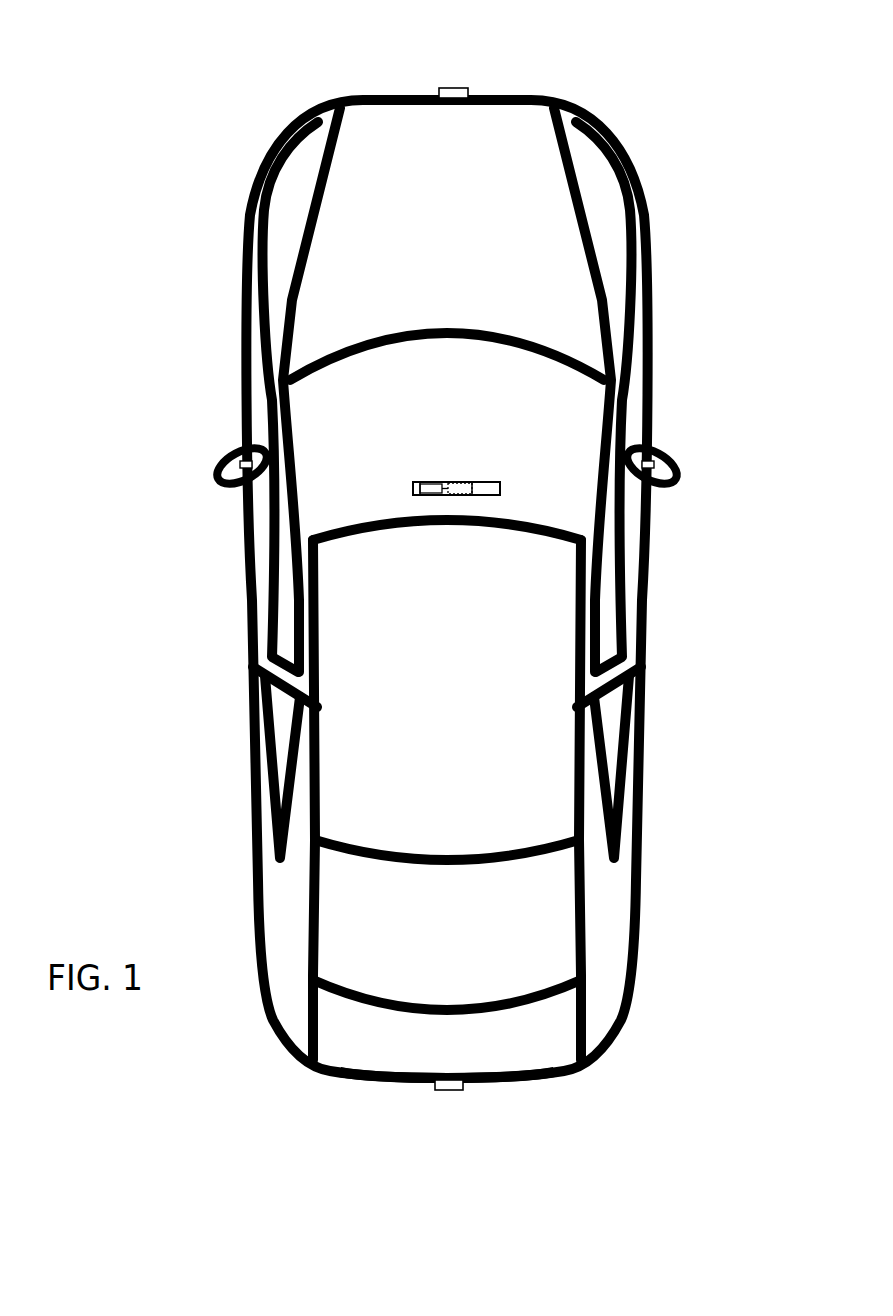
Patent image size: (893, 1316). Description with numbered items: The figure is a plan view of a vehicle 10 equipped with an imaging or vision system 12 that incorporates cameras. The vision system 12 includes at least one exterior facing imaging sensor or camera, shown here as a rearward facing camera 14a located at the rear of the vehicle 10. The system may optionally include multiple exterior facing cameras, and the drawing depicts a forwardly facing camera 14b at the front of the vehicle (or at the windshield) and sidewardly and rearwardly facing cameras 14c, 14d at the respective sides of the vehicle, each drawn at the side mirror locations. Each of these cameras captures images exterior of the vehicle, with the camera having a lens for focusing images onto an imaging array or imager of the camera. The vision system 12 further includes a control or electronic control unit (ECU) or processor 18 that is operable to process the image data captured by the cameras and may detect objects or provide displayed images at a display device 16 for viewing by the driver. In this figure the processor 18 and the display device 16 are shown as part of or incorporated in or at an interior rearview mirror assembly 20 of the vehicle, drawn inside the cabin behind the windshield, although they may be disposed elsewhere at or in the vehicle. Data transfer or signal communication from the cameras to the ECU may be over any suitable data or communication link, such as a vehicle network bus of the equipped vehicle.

The vehicle 10 is at (192, 185).
The vision system 12 is at (390, 1115).
The rearward facing camera 14a is at (454, 1090).
The forwardly facing camera 14b is at (458, 87).
The sidewardly/rearwardly facing camera 14c is at (244, 464).
The sidewardly/rearwardly facing camera 14d is at (650, 464).
The display device 16 is at (430, 483).
The electronic control unit 18 is at (452, 481).
The interior rearview mirror assembly 20 is at (500, 483).